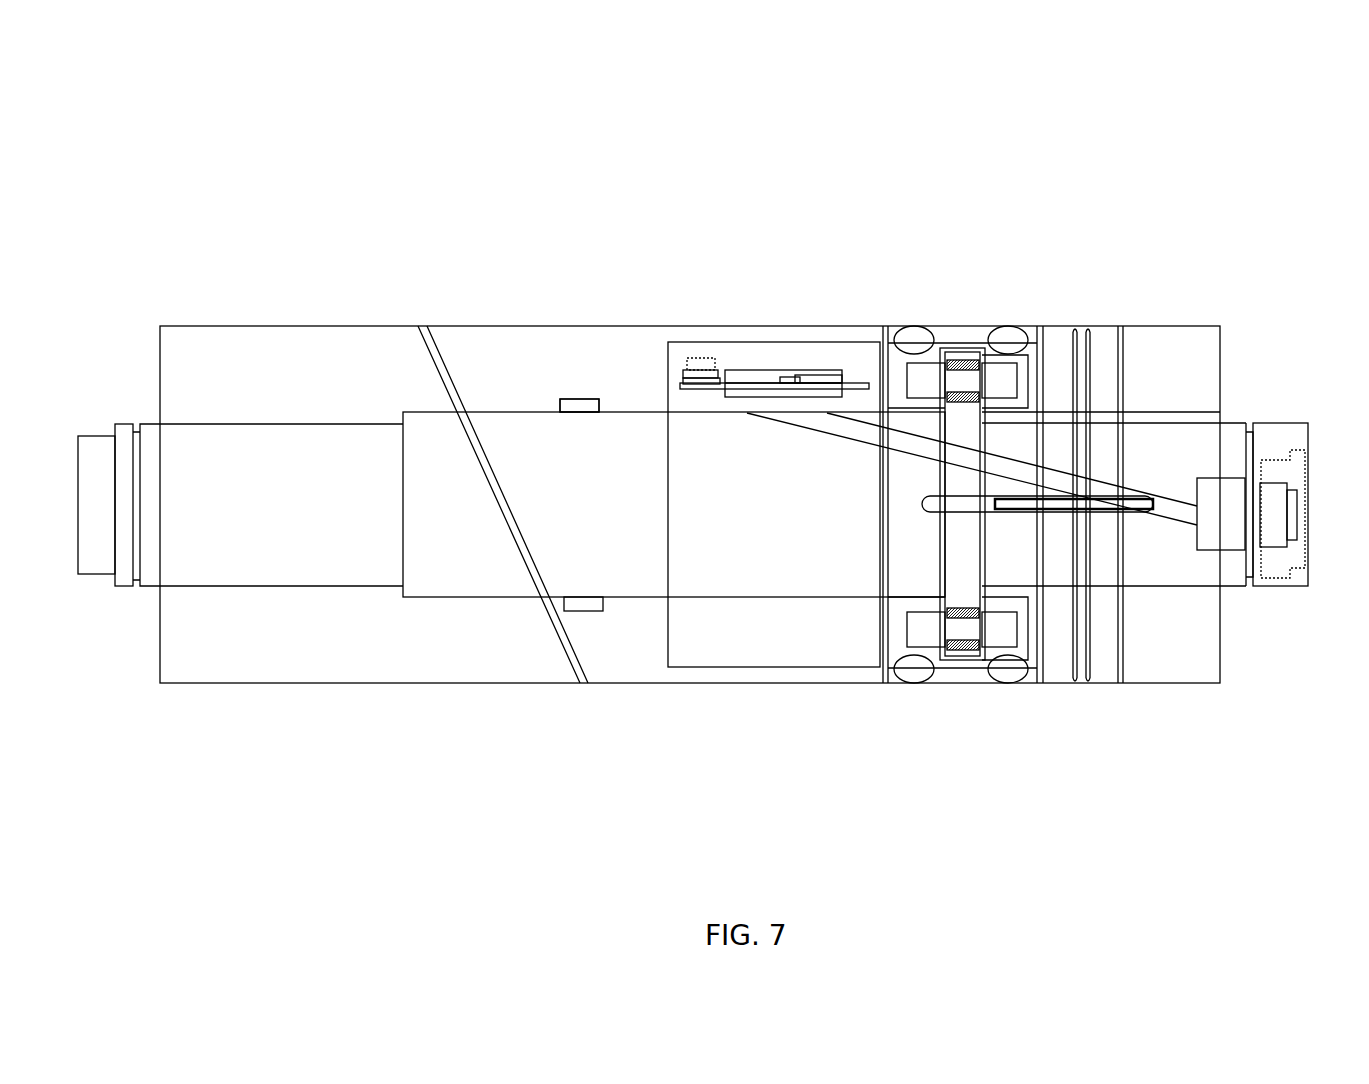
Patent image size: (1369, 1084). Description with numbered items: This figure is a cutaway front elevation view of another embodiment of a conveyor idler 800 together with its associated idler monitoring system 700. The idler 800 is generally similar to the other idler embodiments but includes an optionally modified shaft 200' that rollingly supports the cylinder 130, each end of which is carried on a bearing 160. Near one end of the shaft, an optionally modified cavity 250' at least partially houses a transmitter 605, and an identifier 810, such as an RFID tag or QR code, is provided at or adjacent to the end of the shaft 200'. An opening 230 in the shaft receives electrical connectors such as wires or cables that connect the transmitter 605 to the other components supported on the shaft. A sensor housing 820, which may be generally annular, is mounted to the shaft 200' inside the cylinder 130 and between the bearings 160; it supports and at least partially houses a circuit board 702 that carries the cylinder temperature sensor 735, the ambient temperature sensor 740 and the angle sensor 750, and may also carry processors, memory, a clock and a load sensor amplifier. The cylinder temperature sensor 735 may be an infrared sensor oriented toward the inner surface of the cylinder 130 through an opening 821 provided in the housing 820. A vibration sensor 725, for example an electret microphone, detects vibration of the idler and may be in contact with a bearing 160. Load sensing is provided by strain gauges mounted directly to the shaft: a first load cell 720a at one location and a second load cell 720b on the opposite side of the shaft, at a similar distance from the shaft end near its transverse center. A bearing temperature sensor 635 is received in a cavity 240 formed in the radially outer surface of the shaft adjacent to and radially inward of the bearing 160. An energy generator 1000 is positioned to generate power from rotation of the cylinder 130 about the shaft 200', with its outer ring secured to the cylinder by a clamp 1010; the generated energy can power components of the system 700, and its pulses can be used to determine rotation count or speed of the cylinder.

The idler monitoring system 700 is at (1242, 192).
The conveyor idler 800 is at (300, 777).
The cylinder 130 is at (258, 325).
The modified shaft 200' is at (665, 434).
The first load cell 720a is at (460, 326).
The second load cell 720b is at (593, 611).
The cylinder temperature sensor 735 is at (572, 399).
The ambient temperature sensor 740 is at (579, 405).
The sensor housing 820 is at (668, 633).
The opening 821 is at (712, 356).
The circuit board 702 is at (743, 357).
The vibration sensor 725 is at (805, 377).
The angle sensor 750 is at (783, 377).
The energy generator 1000 is at (952, 342).
The clamp 1010 is at (988, 327).
The bearing 160 is at (1103, 338).
The cavity 240 is at (930, 513).
The bearing temperature sensor 635 is at (1018, 512).
The opening 230 is at (1173, 518).
The transmitter 605 is at (1278, 482).
The identifier 810 is at (1297, 509).
The modified cavity 250' is at (1298, 625).